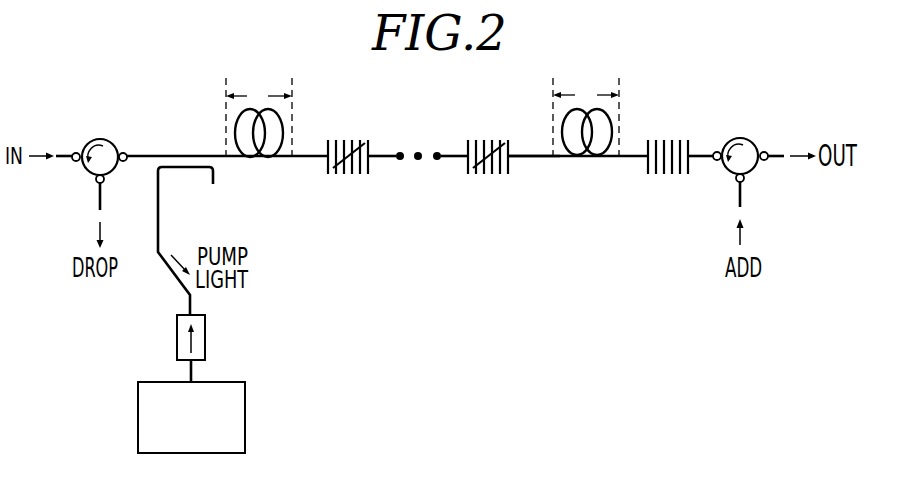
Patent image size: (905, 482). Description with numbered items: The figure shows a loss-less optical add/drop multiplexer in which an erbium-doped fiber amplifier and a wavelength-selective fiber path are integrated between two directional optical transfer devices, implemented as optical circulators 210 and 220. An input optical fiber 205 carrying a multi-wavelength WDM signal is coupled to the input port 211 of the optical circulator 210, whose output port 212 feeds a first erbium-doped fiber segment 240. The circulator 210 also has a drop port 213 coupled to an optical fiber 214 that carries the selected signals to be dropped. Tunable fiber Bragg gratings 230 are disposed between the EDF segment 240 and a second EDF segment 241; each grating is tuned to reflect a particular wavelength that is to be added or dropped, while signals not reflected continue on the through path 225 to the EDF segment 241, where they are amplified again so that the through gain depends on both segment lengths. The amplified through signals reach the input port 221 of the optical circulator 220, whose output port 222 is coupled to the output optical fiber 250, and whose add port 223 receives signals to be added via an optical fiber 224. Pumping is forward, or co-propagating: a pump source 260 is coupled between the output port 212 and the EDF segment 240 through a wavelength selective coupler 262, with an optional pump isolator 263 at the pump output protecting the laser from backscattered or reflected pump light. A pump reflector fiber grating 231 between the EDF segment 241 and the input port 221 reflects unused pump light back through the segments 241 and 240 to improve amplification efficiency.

The input optical fiber 205 is at (72, 152).
The optical circulator 210 is at (102, 139).
The input port 211 is at (74, 162).
The output port 212 is at (122, 152).
The drop port 213 is at (104, 181).
The optical fiber 214 is at (100, 209).
The optical circulator 220 is at (742, 137).
The input port 221 is at (716, 151).
The output port 222 is at (764, 151).
The add port 223 is at (737, 180).
The optical fiber 224 is at (742, 207).
The through path 225 is at (530, 152).
The tunable fiber Bragg gratings 230 is at (352, 141).
The pump reflector fiber grating 231 is at (649, 172).
The erbium-doped fiber segment 240 is at (261, 142).
The erbium-doped fiber segment 241 is at (583, 134).
The output optical fiber 250 is at (770, 159).
The pump source 260 is at (245, 409).
The wavelength selective coupler 262 is at (184, 172).
The pump isolator 263 is at (205, 335).